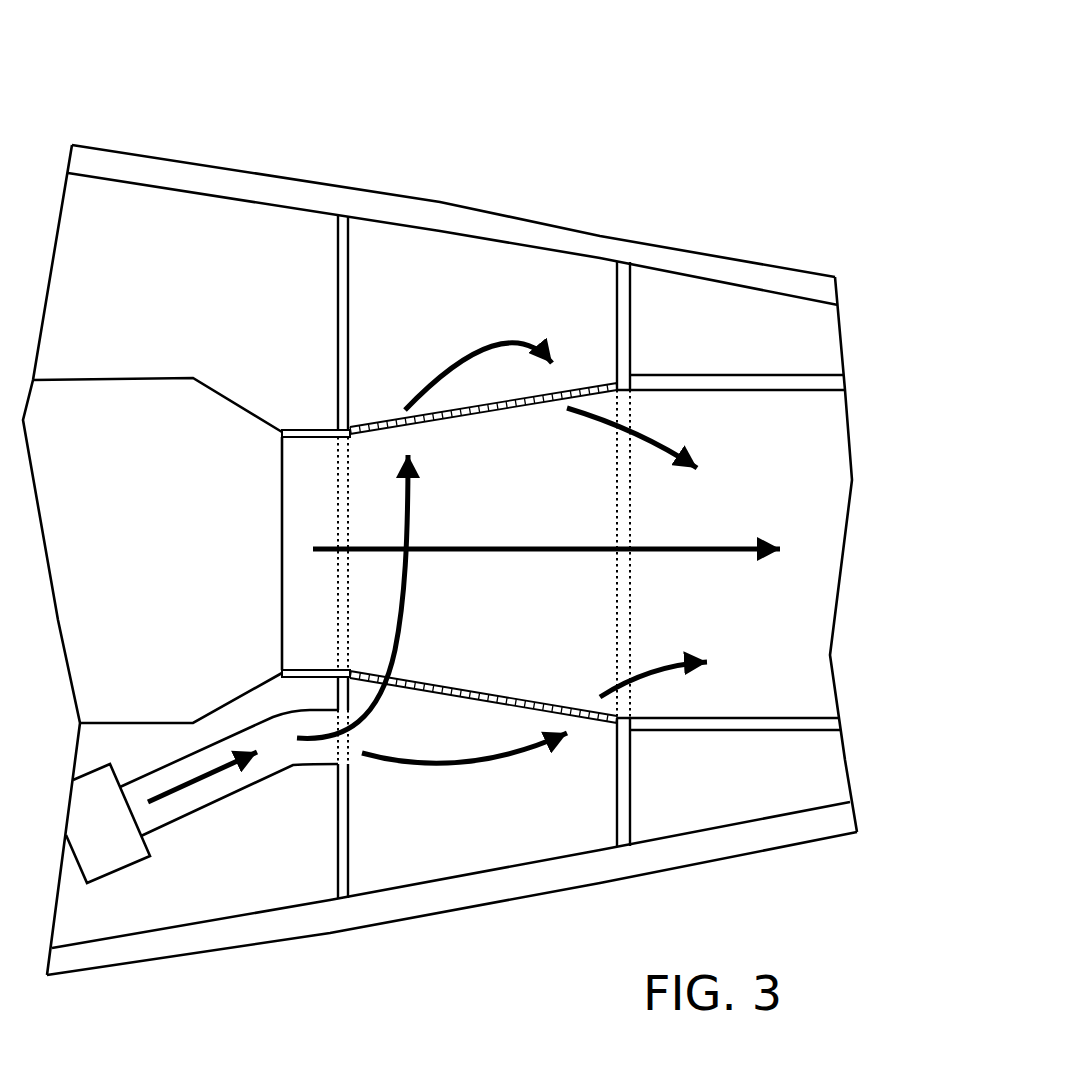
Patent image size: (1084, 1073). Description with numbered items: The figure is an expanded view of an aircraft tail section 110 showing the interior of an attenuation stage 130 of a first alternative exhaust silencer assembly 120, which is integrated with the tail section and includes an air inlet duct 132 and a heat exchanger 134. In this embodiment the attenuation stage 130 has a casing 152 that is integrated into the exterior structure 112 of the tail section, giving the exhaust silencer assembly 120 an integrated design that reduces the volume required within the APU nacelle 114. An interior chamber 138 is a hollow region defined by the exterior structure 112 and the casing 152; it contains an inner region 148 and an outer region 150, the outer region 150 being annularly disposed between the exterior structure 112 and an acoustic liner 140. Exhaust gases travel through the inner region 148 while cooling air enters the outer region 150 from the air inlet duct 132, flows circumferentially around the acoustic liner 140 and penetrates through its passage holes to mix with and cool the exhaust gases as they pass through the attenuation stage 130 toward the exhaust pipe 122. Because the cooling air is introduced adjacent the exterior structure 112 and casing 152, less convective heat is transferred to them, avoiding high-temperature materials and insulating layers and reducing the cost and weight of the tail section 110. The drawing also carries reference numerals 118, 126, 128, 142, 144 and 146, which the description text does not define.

The aircraft tail section 110 is at (614, 49).
The exterior structure 112 is at (297, 179).
The APU nacelle 114 is at (207, 233).
The inlet flange 118 is at (292, 431).
The exhaust silencer assembly 120 is at (306, 928).
The exhaust pipe 122 is at (733, 373).
The inlet wall 126 is at (167, 407).
The primary flow direction 128 is at (728, 542).
The attenuation stage 130 is at (486, 253).
The air inlet duct 132 is at (193, 812).
The heat exchanger 134 is at (113, 862).
The interior chamber 138 is at (574, 278).
The acoustic liner 140 is at (468, 415).
The inlet opening 142 is at (332, 460).
The outlet opening 144 is at (640, 704).
The bypass opening 146 is at (356, 759).
The inner region 148 is at (564, 608).
The outer region 150 is at (430, 327).
The casing 152 is at (340, 313).